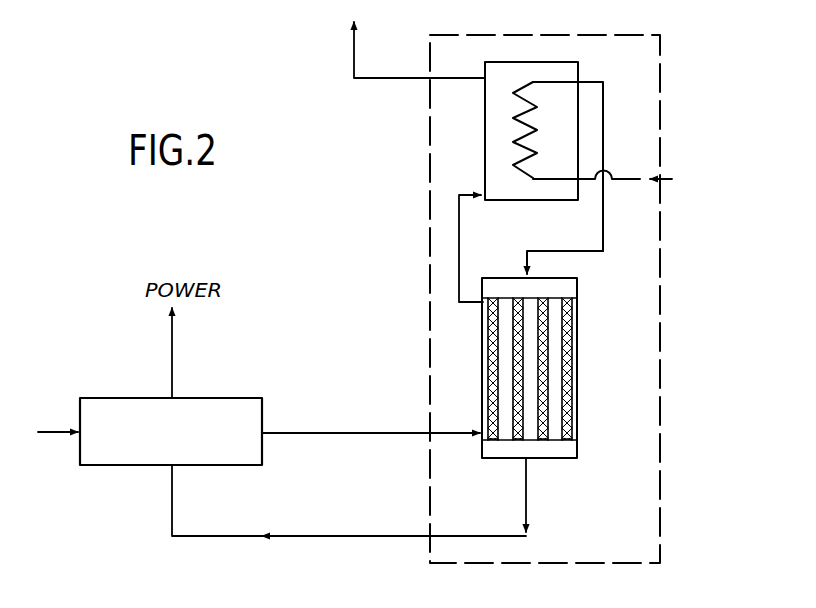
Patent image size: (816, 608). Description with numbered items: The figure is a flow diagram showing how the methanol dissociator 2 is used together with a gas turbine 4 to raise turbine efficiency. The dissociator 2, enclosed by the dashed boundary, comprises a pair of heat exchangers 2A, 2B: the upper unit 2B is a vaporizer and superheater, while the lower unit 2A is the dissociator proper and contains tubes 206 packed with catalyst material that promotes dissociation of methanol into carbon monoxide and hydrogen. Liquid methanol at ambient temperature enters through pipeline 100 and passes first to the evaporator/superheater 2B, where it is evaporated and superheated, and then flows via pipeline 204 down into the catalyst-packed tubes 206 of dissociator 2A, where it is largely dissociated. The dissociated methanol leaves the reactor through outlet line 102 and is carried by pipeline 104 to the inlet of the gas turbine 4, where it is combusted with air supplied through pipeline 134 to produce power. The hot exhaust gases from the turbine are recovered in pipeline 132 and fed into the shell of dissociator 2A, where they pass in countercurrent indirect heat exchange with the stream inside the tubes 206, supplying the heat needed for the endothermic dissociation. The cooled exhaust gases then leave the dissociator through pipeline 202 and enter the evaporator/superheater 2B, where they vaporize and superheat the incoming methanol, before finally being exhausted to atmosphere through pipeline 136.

The dissociator 2 is at (660, 437).
The dissociator heat exchanger 2A is at (482, 373).
The evaporator/superheater 2B is at (525, 63).
The gas turbine 4 is at (215, 397).
The methanol feed pipeline 100 is at (623, 179).
The reactor outlet line 102 is at (527, 500).
The dissociated methanol pipeline 104 is at (197, 538).
The turbine exhaust pipeline 132 is at (310, 424).
The air supply pipeline 134 is at (49, 430).
The exhaust-to-atmosphere pipeline 136 is at (392, 80).
The cooled exhaust gas pipeline 202 is at (459, 220).
The superheated methanol pipeline 204 is at (588, 252).
The catalyst-packed tubes 206 is at (568, 352).